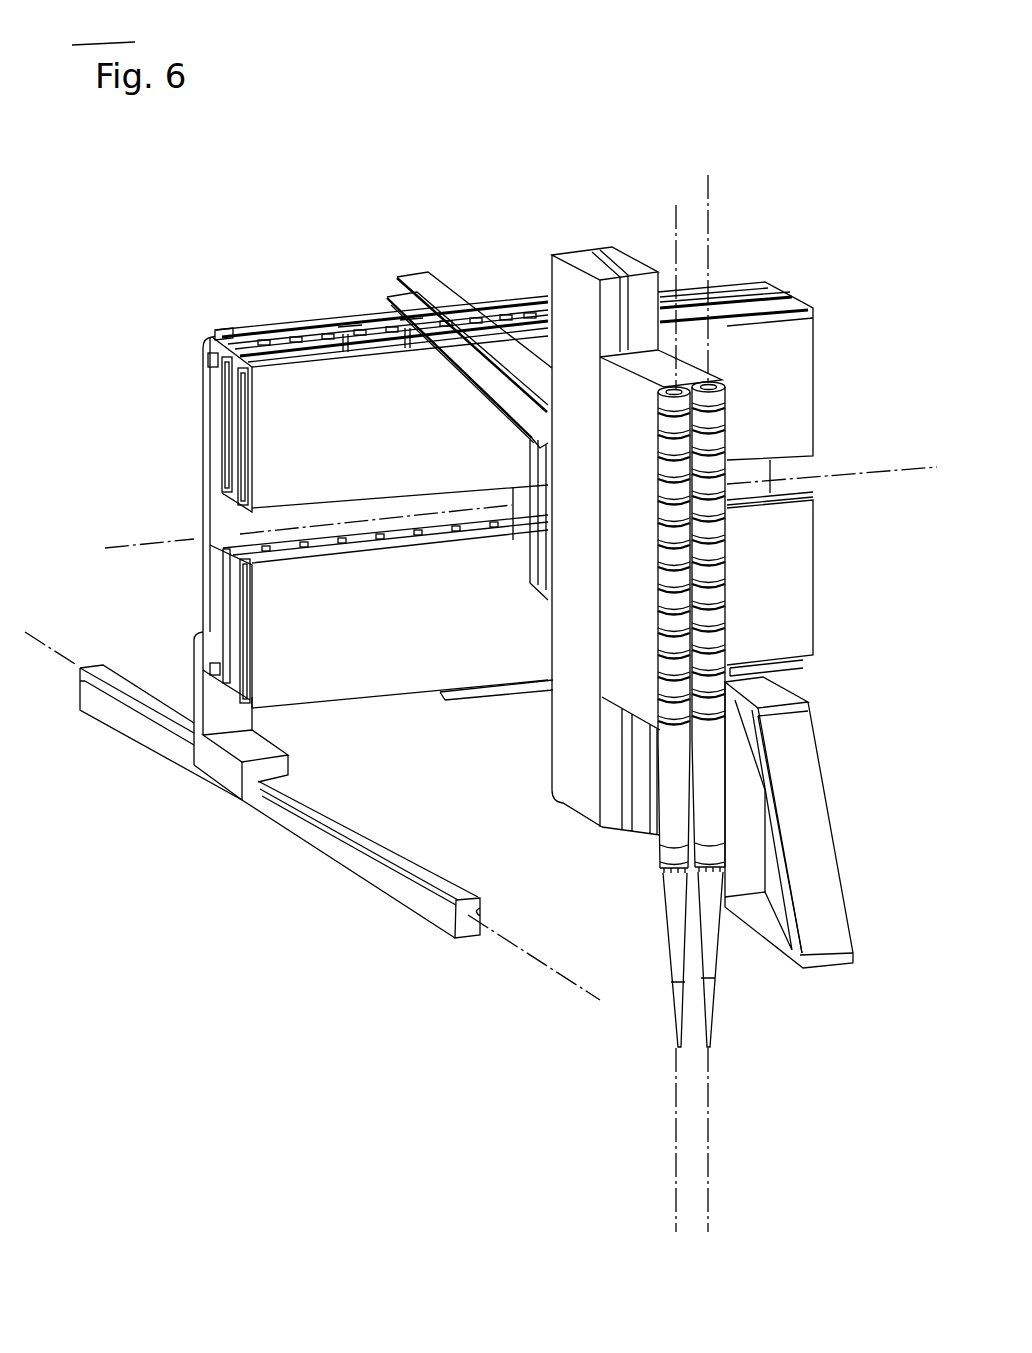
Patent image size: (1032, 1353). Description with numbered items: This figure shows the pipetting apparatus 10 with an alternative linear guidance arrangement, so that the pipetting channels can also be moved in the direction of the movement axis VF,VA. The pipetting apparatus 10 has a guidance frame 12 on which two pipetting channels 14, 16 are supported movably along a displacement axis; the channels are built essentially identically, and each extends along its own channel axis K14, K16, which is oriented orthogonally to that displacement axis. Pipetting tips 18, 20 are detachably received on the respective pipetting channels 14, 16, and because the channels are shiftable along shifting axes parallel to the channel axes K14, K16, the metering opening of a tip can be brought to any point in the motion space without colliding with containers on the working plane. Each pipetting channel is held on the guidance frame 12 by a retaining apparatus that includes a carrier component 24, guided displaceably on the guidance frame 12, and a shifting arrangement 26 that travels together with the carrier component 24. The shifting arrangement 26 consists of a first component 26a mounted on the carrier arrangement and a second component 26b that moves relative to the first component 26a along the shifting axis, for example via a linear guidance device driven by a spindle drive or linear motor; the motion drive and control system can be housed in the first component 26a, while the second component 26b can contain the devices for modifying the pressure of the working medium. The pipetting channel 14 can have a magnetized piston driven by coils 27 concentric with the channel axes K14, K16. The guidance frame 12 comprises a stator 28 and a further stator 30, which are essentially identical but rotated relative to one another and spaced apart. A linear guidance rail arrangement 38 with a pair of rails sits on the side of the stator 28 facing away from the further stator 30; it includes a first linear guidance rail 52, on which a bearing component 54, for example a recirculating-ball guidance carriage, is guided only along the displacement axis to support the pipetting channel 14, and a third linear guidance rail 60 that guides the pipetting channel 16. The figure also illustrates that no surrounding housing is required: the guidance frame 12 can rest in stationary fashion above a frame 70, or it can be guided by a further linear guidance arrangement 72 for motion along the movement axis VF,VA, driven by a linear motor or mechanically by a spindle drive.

The pipetting apparatus 10 is at (354, 126).
The guidance frame 12 is at (205, 490).
The pipetting channel 14 is at (660, 840).
The pipetting channel 16 is at (710, 818).
The pipetting tip 18 is at (675, 930).
The pipetting tip 20 is at (710, 953).
The carrier component 24 is at (507, 390).
The shifting arrangement 26 is at (575, 229).
The first component 26a is at (594, 548).
The second component 26b is at (638, 547).
The coils 27 is at (716, 592).
The stator 28 is at (336, 454).
The further stator 30 is at (353, 642).
The linear guidance rail arrangement 38 is at (262, 289).
The first linear guidance rail 52 is at (352, 342).
The bearing component 54 is at (414, 342).
The third linear guidance rail 60 is at (222, 336).
The frame 70 is at (805, 812).
The linear guidance arrangement 72 is at (168, 797).
The channel axis K14 is at (673, 213).
The channel axis K16 is at (708, 188).
The movement axis VF,VA is at (545, 967).